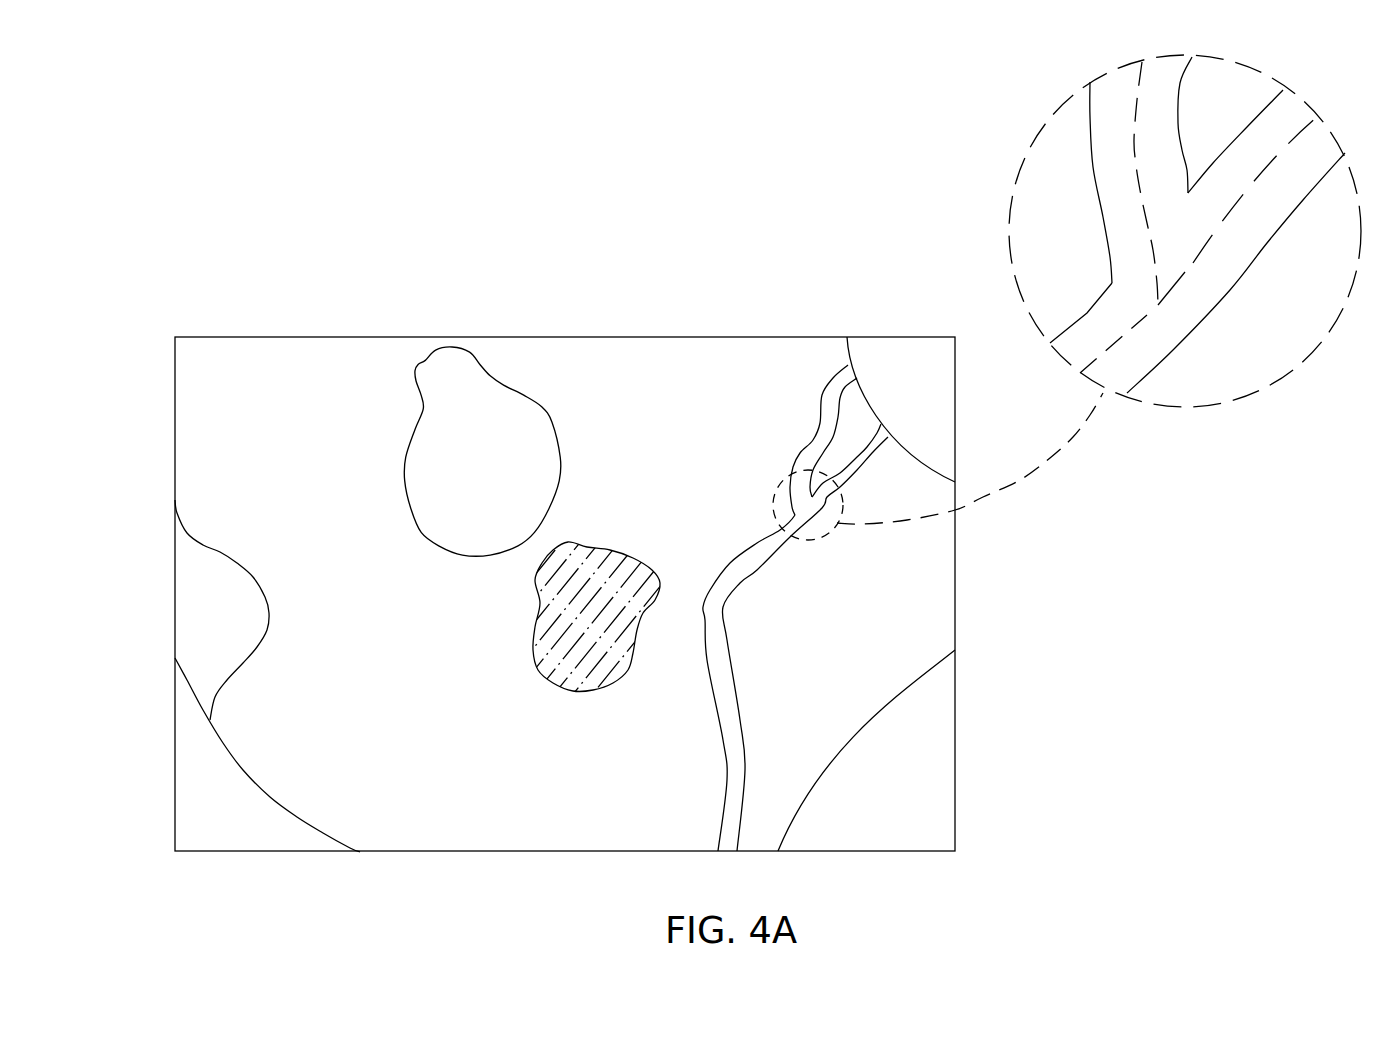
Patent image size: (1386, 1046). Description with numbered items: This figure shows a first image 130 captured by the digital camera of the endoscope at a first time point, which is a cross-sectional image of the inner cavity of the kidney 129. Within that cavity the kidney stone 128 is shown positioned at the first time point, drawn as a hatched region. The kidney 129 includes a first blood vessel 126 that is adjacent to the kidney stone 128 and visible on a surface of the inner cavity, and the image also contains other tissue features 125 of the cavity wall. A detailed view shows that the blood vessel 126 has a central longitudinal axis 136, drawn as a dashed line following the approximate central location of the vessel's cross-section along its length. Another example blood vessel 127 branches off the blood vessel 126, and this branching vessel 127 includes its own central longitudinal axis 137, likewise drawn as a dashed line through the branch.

The tissue region 125 is at (530, 415).
The first blood vessel 126 is at (779, 565).
The blood vessel 127 is at (812, 394).
The kidney stone 128 is at (563, 690).
The kidney 129 is at (474, 825).
The first image 130 is at (287, 322).
The central longitudinal axis 136 is at (1243, 220).
The central longitudinal axis 137 is at (1126, 145).